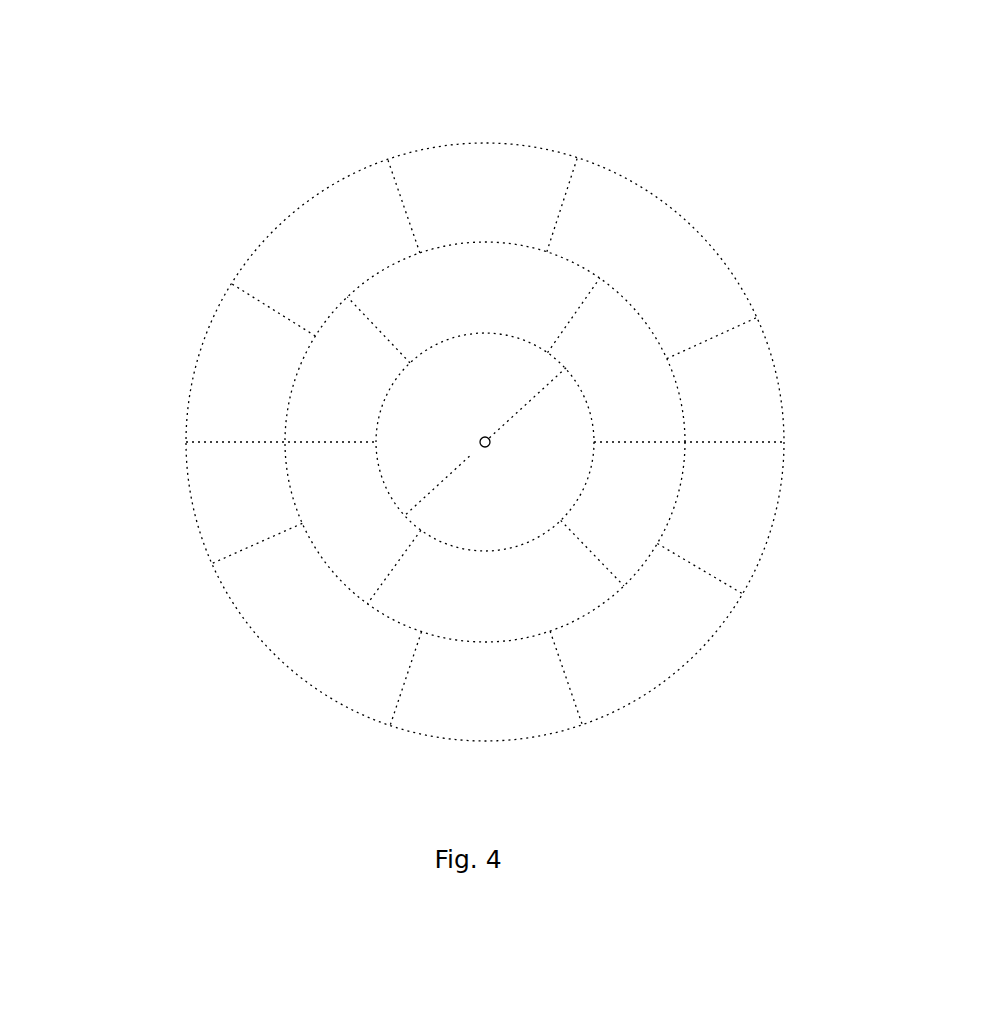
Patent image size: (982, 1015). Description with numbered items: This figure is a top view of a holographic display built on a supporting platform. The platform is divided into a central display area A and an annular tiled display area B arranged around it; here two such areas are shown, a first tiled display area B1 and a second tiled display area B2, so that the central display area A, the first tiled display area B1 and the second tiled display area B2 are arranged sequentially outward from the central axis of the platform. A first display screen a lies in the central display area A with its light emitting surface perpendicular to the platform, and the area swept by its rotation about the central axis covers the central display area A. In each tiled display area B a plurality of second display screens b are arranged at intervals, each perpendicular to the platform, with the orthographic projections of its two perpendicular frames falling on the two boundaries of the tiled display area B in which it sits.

The central display area A is at (485, 512).
The first display screen a is at (547, 397).
The second display screen b is at (365, 310).
The annular tiled display area B is at (100, 695).
The first tiled display area B1 is at (347, 540).
The second tiled display area B2 is at (337, 663).